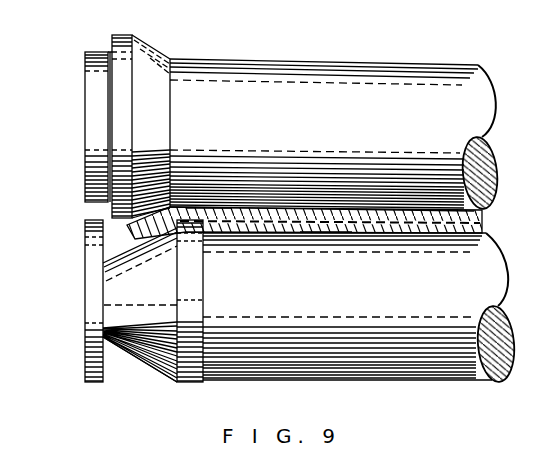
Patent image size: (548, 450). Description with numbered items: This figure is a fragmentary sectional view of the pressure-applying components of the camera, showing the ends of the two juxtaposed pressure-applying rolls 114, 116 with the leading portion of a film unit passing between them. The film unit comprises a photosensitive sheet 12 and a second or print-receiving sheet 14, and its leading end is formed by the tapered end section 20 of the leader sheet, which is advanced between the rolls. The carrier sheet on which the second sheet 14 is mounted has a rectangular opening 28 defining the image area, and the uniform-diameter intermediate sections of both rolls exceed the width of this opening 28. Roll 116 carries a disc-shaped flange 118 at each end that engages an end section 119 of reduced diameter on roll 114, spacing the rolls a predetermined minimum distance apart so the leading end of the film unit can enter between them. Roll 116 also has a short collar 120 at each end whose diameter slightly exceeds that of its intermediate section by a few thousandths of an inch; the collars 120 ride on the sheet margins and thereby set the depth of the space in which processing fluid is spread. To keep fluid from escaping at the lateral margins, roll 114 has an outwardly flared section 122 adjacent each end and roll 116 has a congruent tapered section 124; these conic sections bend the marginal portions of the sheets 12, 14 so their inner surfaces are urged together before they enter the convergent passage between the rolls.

The photosensitive sheet 12 is at (312, 213).
The second or print-receiving sheet 14 is at (345, 229).
The tapered end section 20 is at (203, 214).
The rectangular opening 28 is at (240, 221).
The pressure-applying roll 114 is at (290, 70).
The pressure-applying roll 116 is at (393, 381).
The disc-shaped flange 118 is at (92, 270).
The end section of reduced diameter 119 is at (92, 165).
The collar 120 is at (190, 384).
The outwardly flared section 122 is at (145, 54).
The tapered section 124 is at (140, 345).